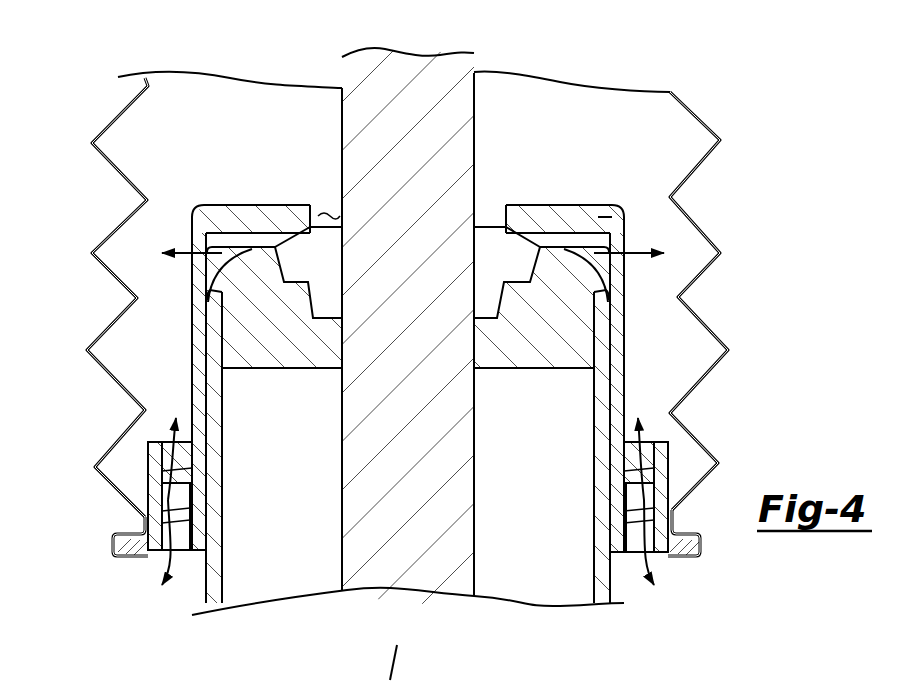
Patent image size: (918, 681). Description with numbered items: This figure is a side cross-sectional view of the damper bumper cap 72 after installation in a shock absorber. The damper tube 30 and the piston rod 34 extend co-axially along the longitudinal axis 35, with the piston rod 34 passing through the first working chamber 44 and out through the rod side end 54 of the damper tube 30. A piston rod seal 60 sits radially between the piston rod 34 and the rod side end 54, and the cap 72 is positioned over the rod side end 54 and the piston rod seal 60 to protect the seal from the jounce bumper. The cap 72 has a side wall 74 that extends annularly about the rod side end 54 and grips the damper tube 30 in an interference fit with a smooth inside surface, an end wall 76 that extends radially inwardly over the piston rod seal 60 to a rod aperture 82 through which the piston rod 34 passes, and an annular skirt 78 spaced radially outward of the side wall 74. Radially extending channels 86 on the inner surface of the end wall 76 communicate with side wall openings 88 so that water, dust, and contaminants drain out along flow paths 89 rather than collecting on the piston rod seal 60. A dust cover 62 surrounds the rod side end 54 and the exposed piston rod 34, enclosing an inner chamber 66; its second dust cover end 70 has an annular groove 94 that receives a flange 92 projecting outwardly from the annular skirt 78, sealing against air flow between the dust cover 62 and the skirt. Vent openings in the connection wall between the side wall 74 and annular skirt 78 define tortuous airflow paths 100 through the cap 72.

The damper tube 30 is at (602, 554).
The piston rod 34 is at (440, 72).
The longitudinal axis 35 is at (390, 676).
The first working chamber 44 is at (247, 558).
The rod side end 54 is at (213, 432).
The piston rod seal 60 is at (537, 342).
The dust cover 62 is at (108, 170).
The inner chamber 66 is at (525, 137).
The second dust cover end 70 is at (389, 362).
The damper bumper cap 72 is at (459, 340).
The side wall 74 is at (195, 360).
The end wall 76 is at (262, 222).
The annular skirt 78 is at (153, 473).
The rod aperture 82 is at (318, 210).
The radially extending channels 86 is at (225, 232).
The side wall openings 88 is at (200, 267).
The flow paths 89 is at (178, 250).
The flange 92 is at (685, 543).
The annular groove 94 is at (128, 555).
The tortuous airflow paths 100 is at (178, 585).